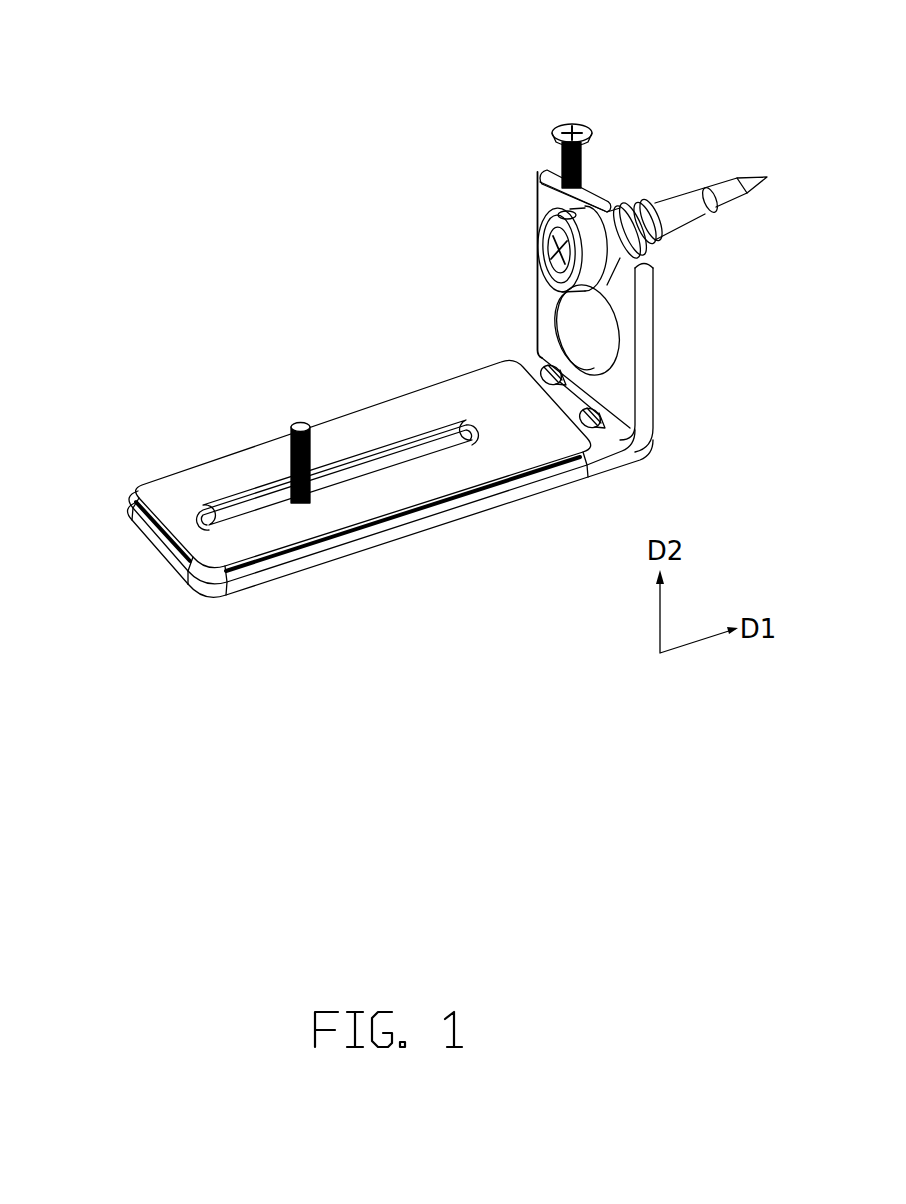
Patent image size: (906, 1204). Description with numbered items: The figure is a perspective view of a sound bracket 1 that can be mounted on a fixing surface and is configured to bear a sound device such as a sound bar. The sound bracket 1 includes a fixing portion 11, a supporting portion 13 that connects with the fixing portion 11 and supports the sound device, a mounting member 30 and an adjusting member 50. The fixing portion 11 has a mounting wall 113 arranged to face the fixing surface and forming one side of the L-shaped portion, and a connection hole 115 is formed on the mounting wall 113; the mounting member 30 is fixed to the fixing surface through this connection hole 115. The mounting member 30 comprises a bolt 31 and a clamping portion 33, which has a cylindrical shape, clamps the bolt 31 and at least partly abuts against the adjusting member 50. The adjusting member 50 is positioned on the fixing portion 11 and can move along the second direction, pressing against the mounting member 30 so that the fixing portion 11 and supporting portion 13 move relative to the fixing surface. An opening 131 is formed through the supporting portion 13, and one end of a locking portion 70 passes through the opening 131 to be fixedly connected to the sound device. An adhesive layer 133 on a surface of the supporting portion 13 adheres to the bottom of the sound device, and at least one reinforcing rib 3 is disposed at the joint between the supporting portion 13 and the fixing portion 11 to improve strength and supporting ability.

The sound bracket 1 is at (366, 48).
The reinforcing rib 3 is at (618, 416).
The fixing portion 11 is at (628, 343).
The supporting portion 13 is at (328, 512).
The mounting member 30 is at (511, 249).
The bolt 31 is at (540, 254).
The clamping portion 33 is at (543, 220).
The adjusting member 50 is at (547, 168).
The locking portion 70 is at (290, 448).
The mounting wall 113 is at (548, 332).
The connection hole 115 is at (600, 323).
The opening 131 is at (410, 467).
The adhesive layer 133 is at (140, 492).